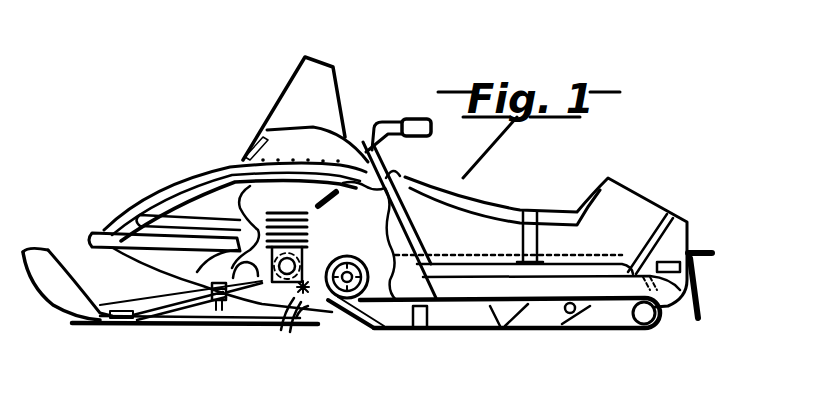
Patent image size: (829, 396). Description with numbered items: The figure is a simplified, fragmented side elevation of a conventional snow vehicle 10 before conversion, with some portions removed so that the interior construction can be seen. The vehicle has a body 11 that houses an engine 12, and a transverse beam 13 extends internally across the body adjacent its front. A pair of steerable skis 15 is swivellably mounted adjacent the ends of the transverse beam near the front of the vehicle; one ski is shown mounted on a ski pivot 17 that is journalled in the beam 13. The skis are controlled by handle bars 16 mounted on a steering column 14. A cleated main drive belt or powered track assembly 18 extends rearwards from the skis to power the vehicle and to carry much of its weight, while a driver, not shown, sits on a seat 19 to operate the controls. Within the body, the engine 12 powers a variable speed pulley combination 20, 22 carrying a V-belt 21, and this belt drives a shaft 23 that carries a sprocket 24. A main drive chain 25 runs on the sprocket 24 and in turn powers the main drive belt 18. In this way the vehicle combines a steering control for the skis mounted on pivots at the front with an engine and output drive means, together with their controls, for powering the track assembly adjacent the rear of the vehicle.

The snow vehicle 10 is at (226, 102).
The body 11 is at (189, 207).
The engine 12 is at (260, 233).
The transverse beam 13 is at (193, 268).
The steering column 14 is at (337, 203).
The steerable ski 15 is at (62, 307).
The handle bars 16 is at (388, 122).
The ski pivot 17 is at (200, 295).
The main drive belt 18 is at (413, 326).
The seat 19 is at (507, 210).
The variable speed pulley 20 is at (233, 268).
The V-belt 21 is at (296, 289).
The variable speed pulley 22 is at (288, 328).
The shaft 23 is at (298, 320).
The sprocket 24 is at (288, 328).
The main drive chain 25 is at (341, 306).